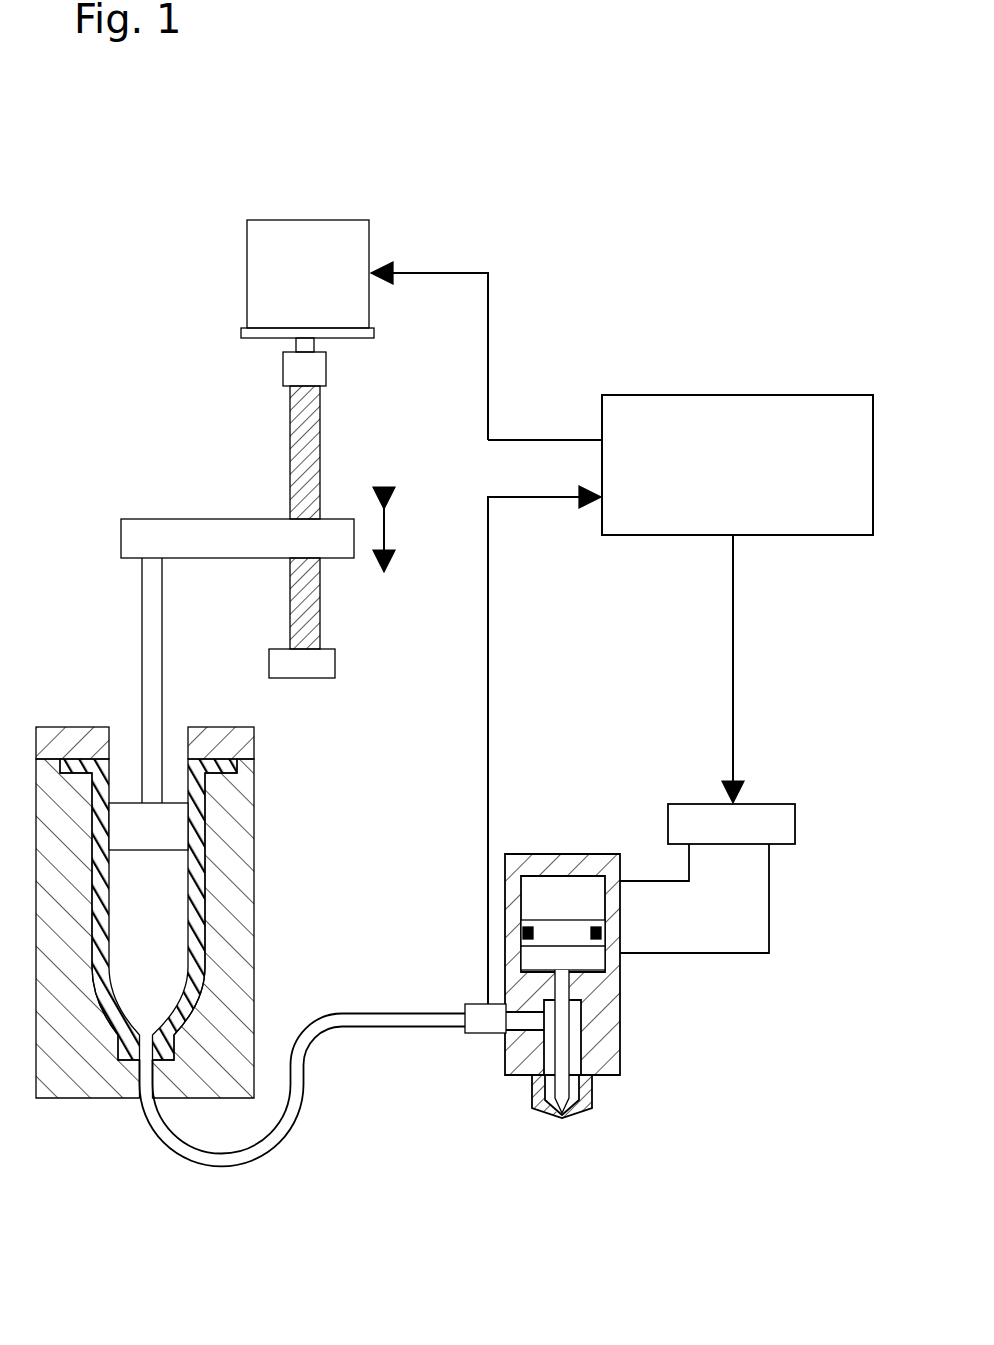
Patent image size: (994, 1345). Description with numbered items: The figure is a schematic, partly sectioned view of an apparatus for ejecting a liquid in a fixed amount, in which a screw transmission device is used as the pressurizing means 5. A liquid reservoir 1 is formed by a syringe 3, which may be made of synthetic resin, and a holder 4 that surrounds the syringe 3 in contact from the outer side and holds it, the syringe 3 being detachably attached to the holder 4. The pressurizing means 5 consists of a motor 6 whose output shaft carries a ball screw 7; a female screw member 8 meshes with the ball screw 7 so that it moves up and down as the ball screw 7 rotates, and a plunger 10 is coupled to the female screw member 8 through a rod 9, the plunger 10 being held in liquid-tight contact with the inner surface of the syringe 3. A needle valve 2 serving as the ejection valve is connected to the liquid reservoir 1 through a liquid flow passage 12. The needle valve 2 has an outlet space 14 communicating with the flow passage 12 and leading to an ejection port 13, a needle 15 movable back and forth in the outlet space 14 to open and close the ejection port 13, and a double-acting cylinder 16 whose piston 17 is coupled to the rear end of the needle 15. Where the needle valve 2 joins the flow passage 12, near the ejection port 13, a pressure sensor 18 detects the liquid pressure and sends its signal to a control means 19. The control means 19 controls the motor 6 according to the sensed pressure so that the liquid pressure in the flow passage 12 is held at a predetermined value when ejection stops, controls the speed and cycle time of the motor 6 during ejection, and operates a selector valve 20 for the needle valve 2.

The liquid reservoir 1 is at (198, 912).
The needle valve 2 is at (609, 984).
The syringe 3 is at (193, 913).
The holder 4 is at (235, 972).
The pressurizing means 5 is at (253, 415).
The motor 6 is at (318, 240).
The ball screw 7 is at (318, 465).
The female screw member 8 is at (217, 538).
The rod 9 is at (152, 612).
The plunger 10 is at (167, 828).
The liquid flow passage 12 is at (303, 1120).
The ejection port 13 is at (561, 1118).
The outlet space 14 is at (576, 1052).
The needle 15 is at (559, 1079).
The double-acting cylinder 16 is at (625, 927).
The piston 17 is at (564, 931).
The pressure sensor 18 is at (483, 1027).
The control means 19 is at (668, 522).
The selector valve 20 is at (760, 821).